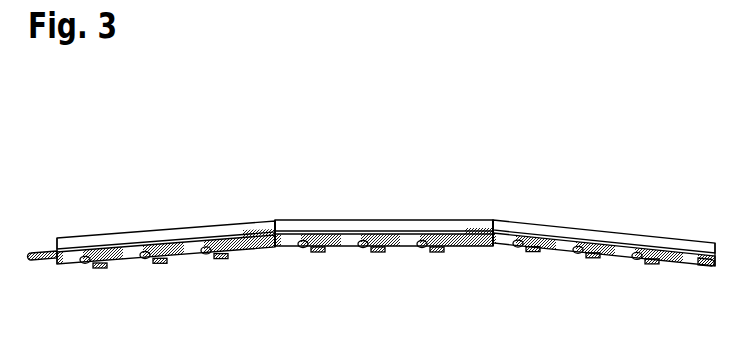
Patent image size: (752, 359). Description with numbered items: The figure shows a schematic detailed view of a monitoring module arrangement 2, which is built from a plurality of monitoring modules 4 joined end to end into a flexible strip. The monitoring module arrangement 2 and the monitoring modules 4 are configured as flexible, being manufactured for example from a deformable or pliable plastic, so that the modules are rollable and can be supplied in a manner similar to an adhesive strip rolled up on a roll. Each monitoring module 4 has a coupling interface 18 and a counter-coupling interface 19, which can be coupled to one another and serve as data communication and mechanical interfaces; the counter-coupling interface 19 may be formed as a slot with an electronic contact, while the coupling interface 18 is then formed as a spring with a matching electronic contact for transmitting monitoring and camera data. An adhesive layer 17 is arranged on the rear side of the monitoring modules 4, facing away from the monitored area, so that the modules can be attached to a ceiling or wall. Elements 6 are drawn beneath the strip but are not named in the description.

The monitoring module arrangement 2 is at (100, 190).
The monitoring module 4 is at (193, 227).
The connecting element 6 is at (88, 262).
The adhesive layer 17 is at (140, 232).
The coupling interface 18 is at (33, 260).
The counter-coupling interface 19 is at (693, 268).